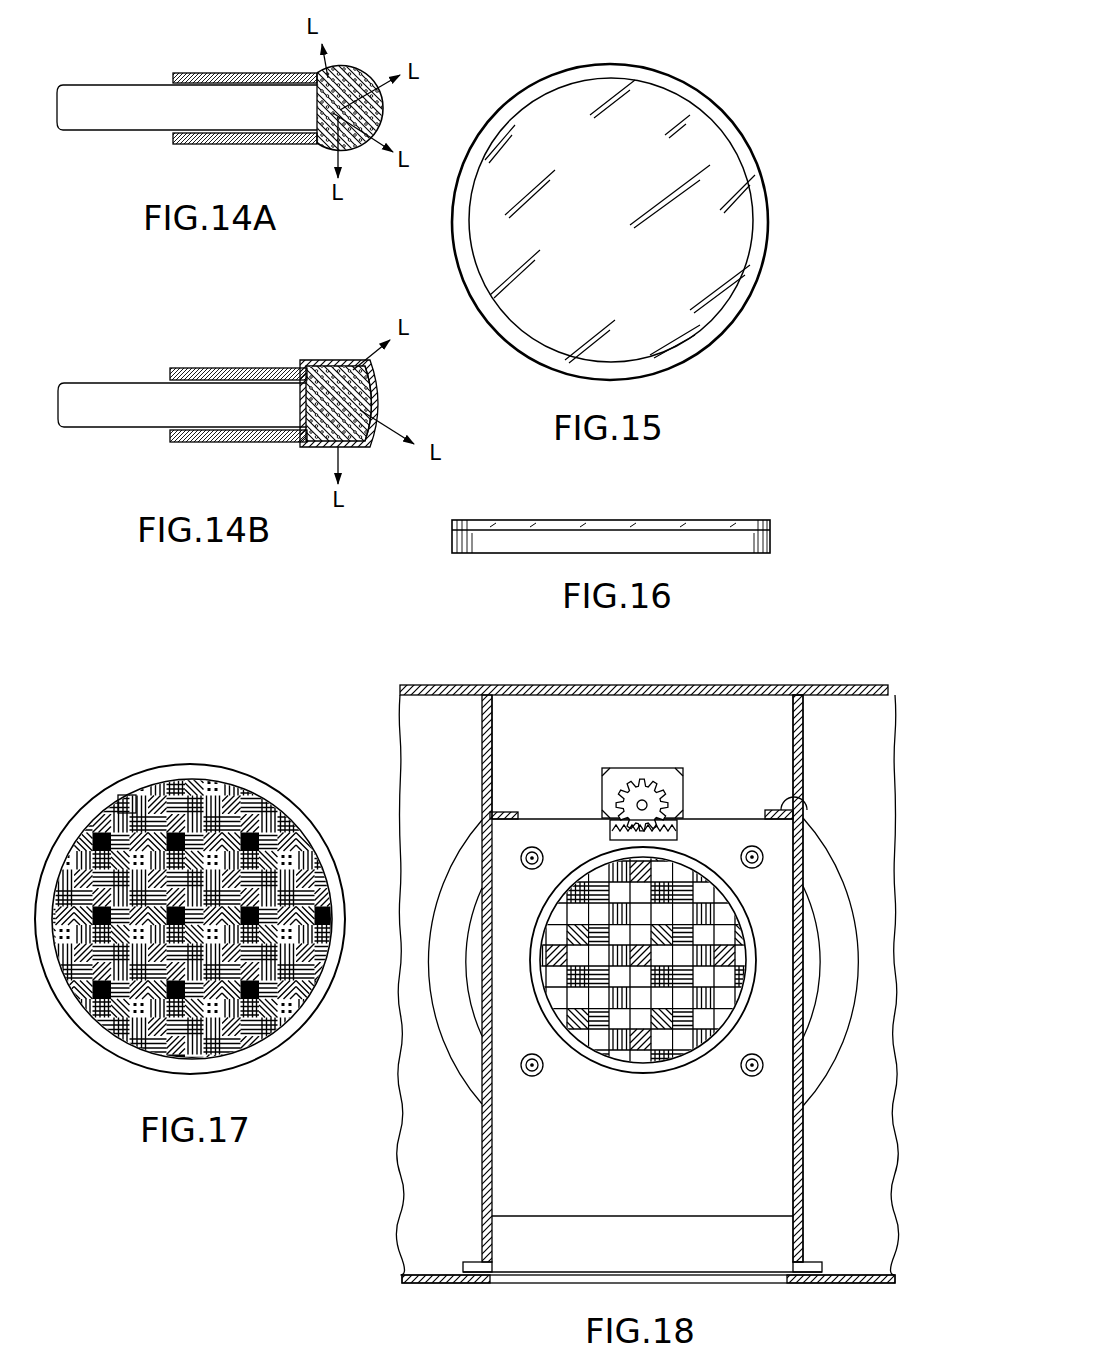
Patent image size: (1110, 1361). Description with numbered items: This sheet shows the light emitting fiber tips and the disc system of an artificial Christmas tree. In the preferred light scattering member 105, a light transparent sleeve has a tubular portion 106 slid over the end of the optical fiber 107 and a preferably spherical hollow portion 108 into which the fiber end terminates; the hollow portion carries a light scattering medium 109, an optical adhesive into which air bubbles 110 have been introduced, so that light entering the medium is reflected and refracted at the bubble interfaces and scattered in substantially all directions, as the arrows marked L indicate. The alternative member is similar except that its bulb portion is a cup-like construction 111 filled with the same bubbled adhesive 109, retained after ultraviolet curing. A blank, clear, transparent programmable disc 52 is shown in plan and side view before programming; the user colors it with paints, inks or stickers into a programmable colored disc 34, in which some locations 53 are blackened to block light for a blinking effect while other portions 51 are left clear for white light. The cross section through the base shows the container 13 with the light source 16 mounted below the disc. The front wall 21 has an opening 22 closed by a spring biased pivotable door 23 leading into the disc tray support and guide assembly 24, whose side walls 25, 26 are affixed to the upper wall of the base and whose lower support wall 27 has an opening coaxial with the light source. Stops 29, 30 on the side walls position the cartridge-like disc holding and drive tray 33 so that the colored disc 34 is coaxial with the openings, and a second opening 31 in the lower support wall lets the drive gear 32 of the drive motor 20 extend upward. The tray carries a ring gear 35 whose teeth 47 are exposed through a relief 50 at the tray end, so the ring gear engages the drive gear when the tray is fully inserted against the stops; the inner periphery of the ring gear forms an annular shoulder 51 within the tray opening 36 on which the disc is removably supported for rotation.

In FIG. 18, the container 13 is at (400, 687).
In FIG. 18, the light source 16 is at (450, 862).
In FIG. 18, the drive motor 20 is at (665, 772).
In FIG. 18, the front wall 21 is at (447, 1284).
In FIG. 18, the opening 22 is at (788, 1281).
In FIG. 18, the door 23 is at (503, 1243).
In FIG. 18, the disc tray support and guide assembly 24 is at (814, 759).
In FIG. 18, the side wall 25 is at (482, 755).
In FIG. 18, the side wall 26 is at (803, 783).
In FIG. 18, the lower support wall 27 is at (508, 728).
In FIG. 18, the stop 29 is at (503, 810).
In FIG. 18, the stop 30 is at (800, 803).
In FIG. 18, the second opening 31 is at (607, 770).
In FIG. 18, the drive gear 32 is at (665, 793).
In FIG. 18, the disc holding and drive tray 33 is at (765, 1179).
In FIG. 17, the programmable colored disc 34 is at (251, 772).
In FIG. 18, the programmable colored disc 34 is at (714, 924).
In FIG. 18, the ring gear 35 is at (603, 817).
In FIG. 18, the opening in the disc tray 36 is at (745, 955).
In FIG. 18, the teeth 47 is at (662, 833).
In FIG. 18, the relief 50 is at (672, 817).
In FIG. 17, the annular shoulder 51 is at (92, 823).
In FIG. 15, the programmable disc 52 is at (750, 129).
In FIG. 17, the blackened locations 53 is at (127, 795).
In FIG. 14A, the light scattering member 105 is at (364, 53).
In FIG. 14B, the light scattering member 105 is at (340, 348).
In FIG. 14A, the tubular portion 106 is at (232, 73).
In FIG. 14B, the tubular portion 106 is at (222, 368).
In FIG. 14A, the optical fiber 107 is at (190, 110).
In FIG. 14B, the optical fiber 107 is at (173, 405).
In FIG. 14A, the hollow portion 108 is at (380, 104).
In FIG. 14A, the light scattering medium 109 is at (373, 136).
In FIG. 14B, the light scattering medium 109 is at (377, 410).
In FIG. 14A, the air bubbles 110 is at (368, 68).
In FIG. 14B, the air bubbles 110 is at (360, 385).
In FIG. 14B, the cup-like construction 111 is at (352, 450).